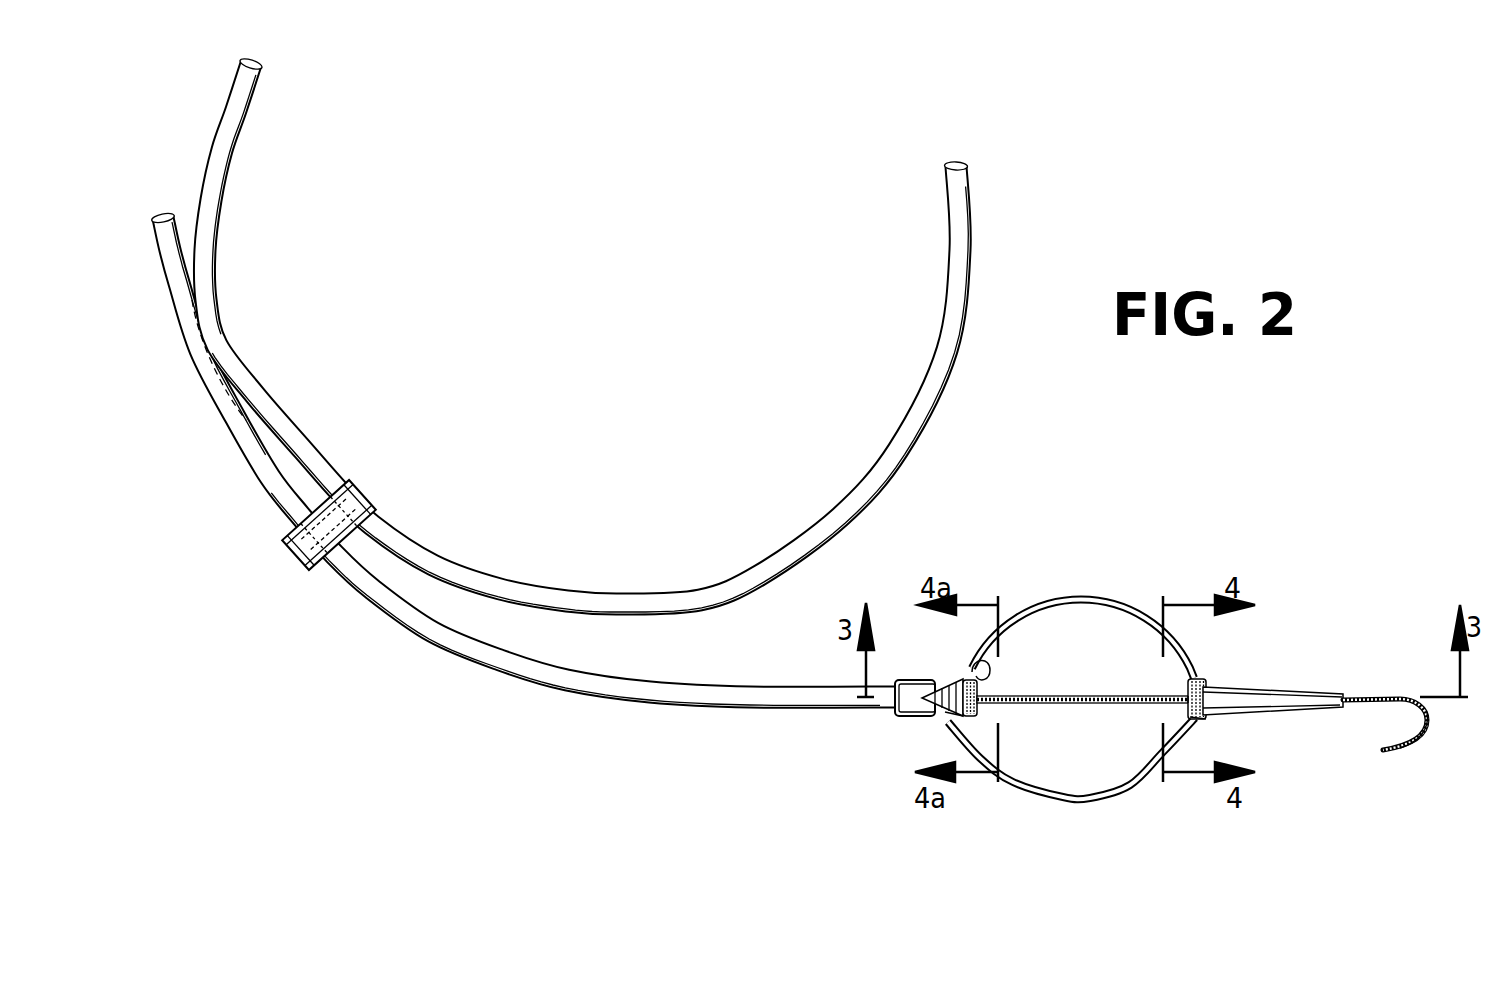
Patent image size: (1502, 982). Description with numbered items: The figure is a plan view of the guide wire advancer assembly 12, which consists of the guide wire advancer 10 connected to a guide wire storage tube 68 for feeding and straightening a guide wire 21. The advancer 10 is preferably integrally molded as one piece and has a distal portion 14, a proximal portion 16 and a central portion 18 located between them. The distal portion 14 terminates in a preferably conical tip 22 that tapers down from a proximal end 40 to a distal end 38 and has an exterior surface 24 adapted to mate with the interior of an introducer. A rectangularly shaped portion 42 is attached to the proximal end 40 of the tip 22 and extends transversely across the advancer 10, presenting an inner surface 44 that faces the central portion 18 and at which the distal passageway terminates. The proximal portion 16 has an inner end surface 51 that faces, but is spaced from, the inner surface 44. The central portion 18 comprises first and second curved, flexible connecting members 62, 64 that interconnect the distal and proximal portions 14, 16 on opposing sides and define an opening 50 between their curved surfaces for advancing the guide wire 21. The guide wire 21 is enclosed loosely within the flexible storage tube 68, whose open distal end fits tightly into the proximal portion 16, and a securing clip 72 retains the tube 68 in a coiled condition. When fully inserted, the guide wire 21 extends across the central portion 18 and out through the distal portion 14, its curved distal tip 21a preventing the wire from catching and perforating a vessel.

The guide wire advancer 10 is at (1053, 565).
The guide wire advancer assembly 12 is at (840, 744).
The distal portion 14 is at (1270, 690).
The proximal portion 16 is at (912, 686).
The central portion 18 is at (1077, 600).
The guide wire 21 is at (1037, 703).
The distal tip 21a is at (1398, 750).
The tip 22 is at (1328, 689).
The exterior surface 24 is at (1290, 713).
The distal end 38 is at (1345, 703).
The proximal end 40 is at (1216, 685).
The rectangularly shaped portion 42 is at (1213, 712).
The inner surface 44 is at (1190, 703).
The opening 50 is at (1090, 752).
The inner end surface 51 is at (988, 672).
The first connecting member 62 is at (1020, 786).
The second connecting member 64 is at (992, 622).
The guide wire storage tube 68 is at (975, 247).
The securing clip 72 is at (347, 497).